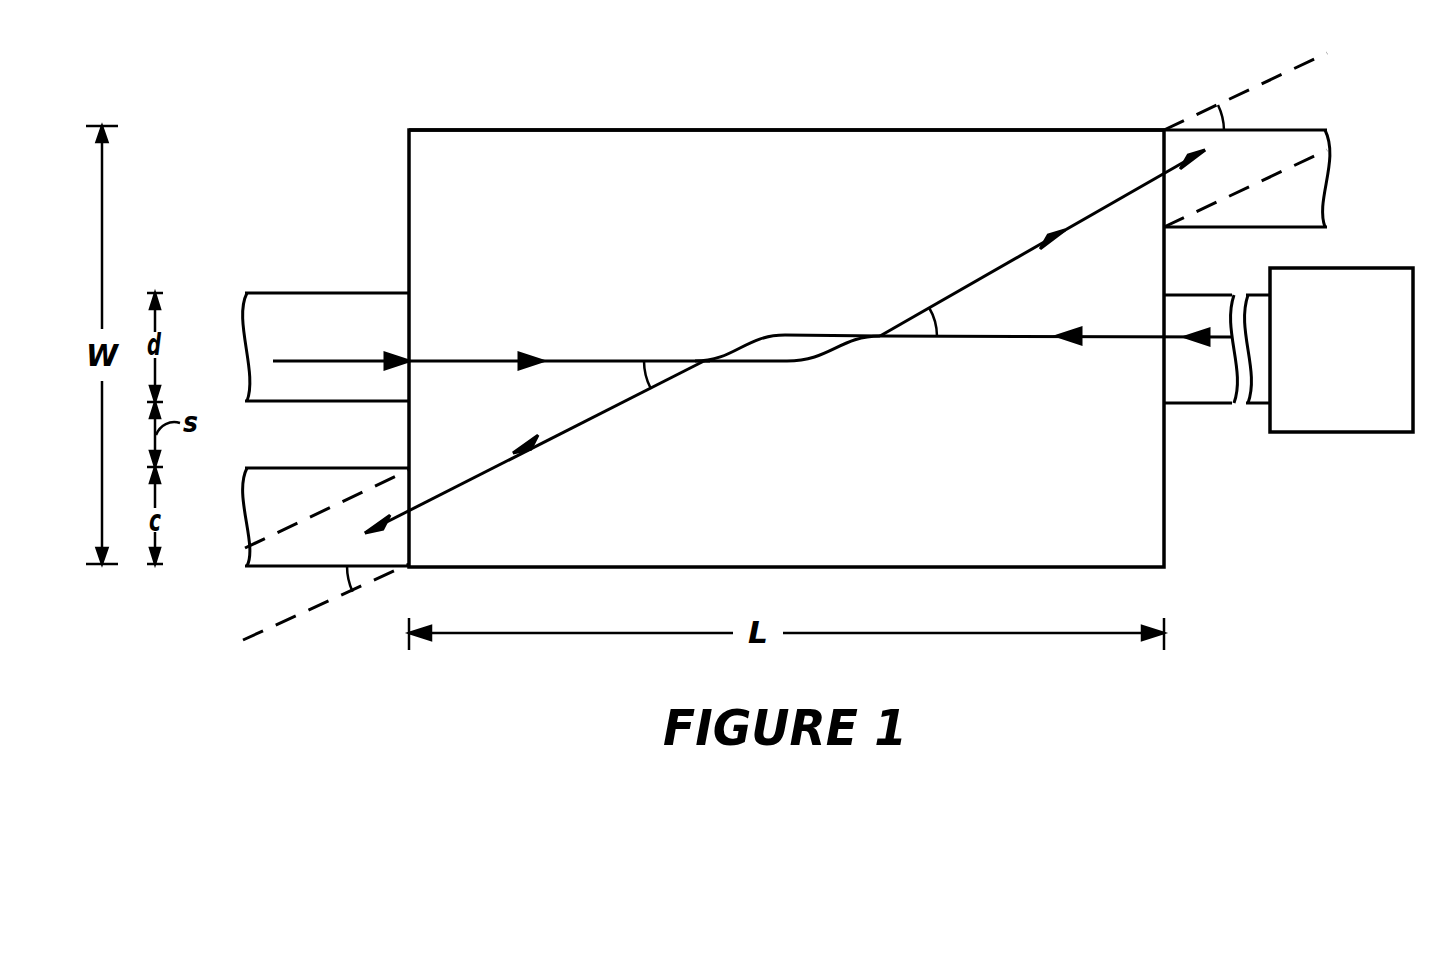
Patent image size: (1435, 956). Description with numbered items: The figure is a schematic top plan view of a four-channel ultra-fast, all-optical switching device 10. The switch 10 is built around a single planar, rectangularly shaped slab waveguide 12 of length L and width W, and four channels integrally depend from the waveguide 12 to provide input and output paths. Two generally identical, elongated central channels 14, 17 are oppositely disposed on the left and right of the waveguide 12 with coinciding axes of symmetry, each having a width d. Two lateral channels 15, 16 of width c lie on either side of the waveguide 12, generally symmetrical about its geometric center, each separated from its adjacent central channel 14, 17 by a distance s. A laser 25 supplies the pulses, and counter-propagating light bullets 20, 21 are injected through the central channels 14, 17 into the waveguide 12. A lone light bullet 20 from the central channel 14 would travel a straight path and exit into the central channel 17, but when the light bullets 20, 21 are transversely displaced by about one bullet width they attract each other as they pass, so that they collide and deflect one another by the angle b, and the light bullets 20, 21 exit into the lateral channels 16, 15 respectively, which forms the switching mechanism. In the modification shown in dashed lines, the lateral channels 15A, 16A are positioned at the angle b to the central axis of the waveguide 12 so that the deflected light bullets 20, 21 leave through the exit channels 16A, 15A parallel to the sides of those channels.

The switching device 10 is at (833, 90).
The slab waveguide 12 is at (490, 147).
The central channel 14 is at (315, 300).
The lateral channel 15 is at (303, 487).
The angled lateral channel 15A is at (320, 600).
The lateral channel 16 is at (1295, 140).
The angled lateral channel 16A is at (1175, 128).
The central channel 17 is at (1215, 305).
The light bullet 20 is at (560, 361).
The light bullet 21 is at (493, 467).
The laser 25 is at (1325, 415).